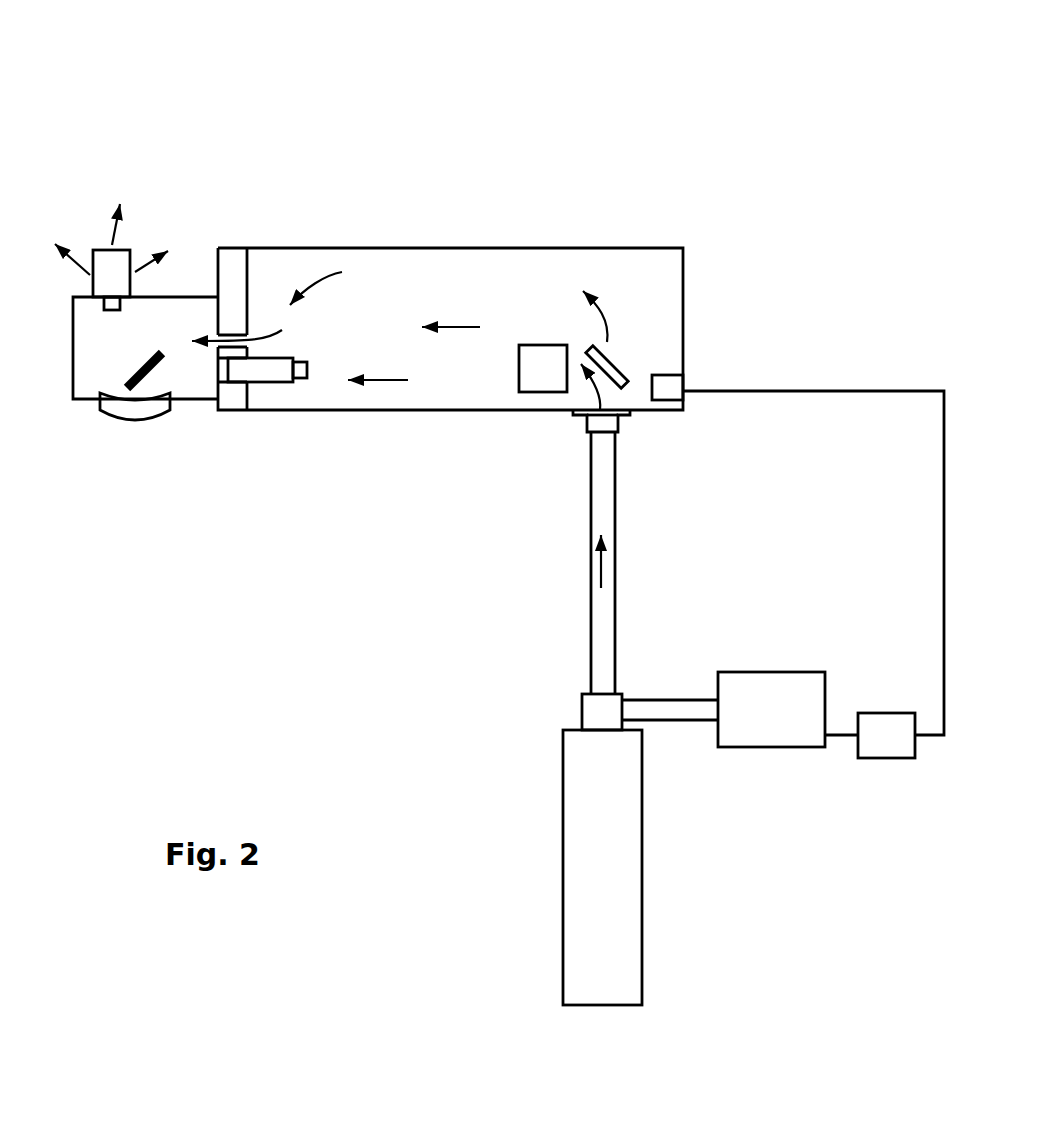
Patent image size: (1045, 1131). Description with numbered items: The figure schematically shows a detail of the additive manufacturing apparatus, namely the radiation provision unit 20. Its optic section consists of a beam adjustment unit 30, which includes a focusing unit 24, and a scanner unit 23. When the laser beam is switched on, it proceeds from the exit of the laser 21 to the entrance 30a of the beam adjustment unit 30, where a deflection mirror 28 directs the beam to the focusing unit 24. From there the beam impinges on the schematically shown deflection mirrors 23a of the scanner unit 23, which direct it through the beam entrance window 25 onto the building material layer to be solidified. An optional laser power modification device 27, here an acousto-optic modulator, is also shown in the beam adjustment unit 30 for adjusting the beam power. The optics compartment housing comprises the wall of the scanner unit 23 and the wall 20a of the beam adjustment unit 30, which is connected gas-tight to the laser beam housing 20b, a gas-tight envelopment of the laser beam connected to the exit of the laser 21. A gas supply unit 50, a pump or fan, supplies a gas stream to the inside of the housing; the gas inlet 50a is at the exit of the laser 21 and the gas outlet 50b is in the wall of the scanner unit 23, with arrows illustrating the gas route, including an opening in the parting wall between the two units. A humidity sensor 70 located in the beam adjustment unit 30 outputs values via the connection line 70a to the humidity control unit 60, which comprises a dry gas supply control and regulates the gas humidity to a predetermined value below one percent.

The radiation provision unit 20 is at (605, 152).
The wall of the beam adjustment unit 20a is at (455, 248).
The laser beam housing 20b is at (605, 505).
The laser 21 is at (620, 913).
The scanner unit 23 is at (173, 297).
The deflection mirrors 23a is at (123, 363).
The focusing unit 24 is at (282, 382).
The beam entrance window 25 is at (142, 413).
The laser power modification device 27 is at (540, 345).
The deflection mirror 28 is at (618, 372).
The beam adjustment unit 30 is at (655, 308).
The entrance of the beam adjustment unit 30a is at (592, 417).
The gas supply unit 50 is at (827, 698).
The gas inlet 50a is at (620, 708).
The gas outlet 50b is at (120, 250).
The humidity control unit 60 is at (885, 760).
The humidity sensor 70 is at (673, 388).
The connection line 70a is at (847, 391).